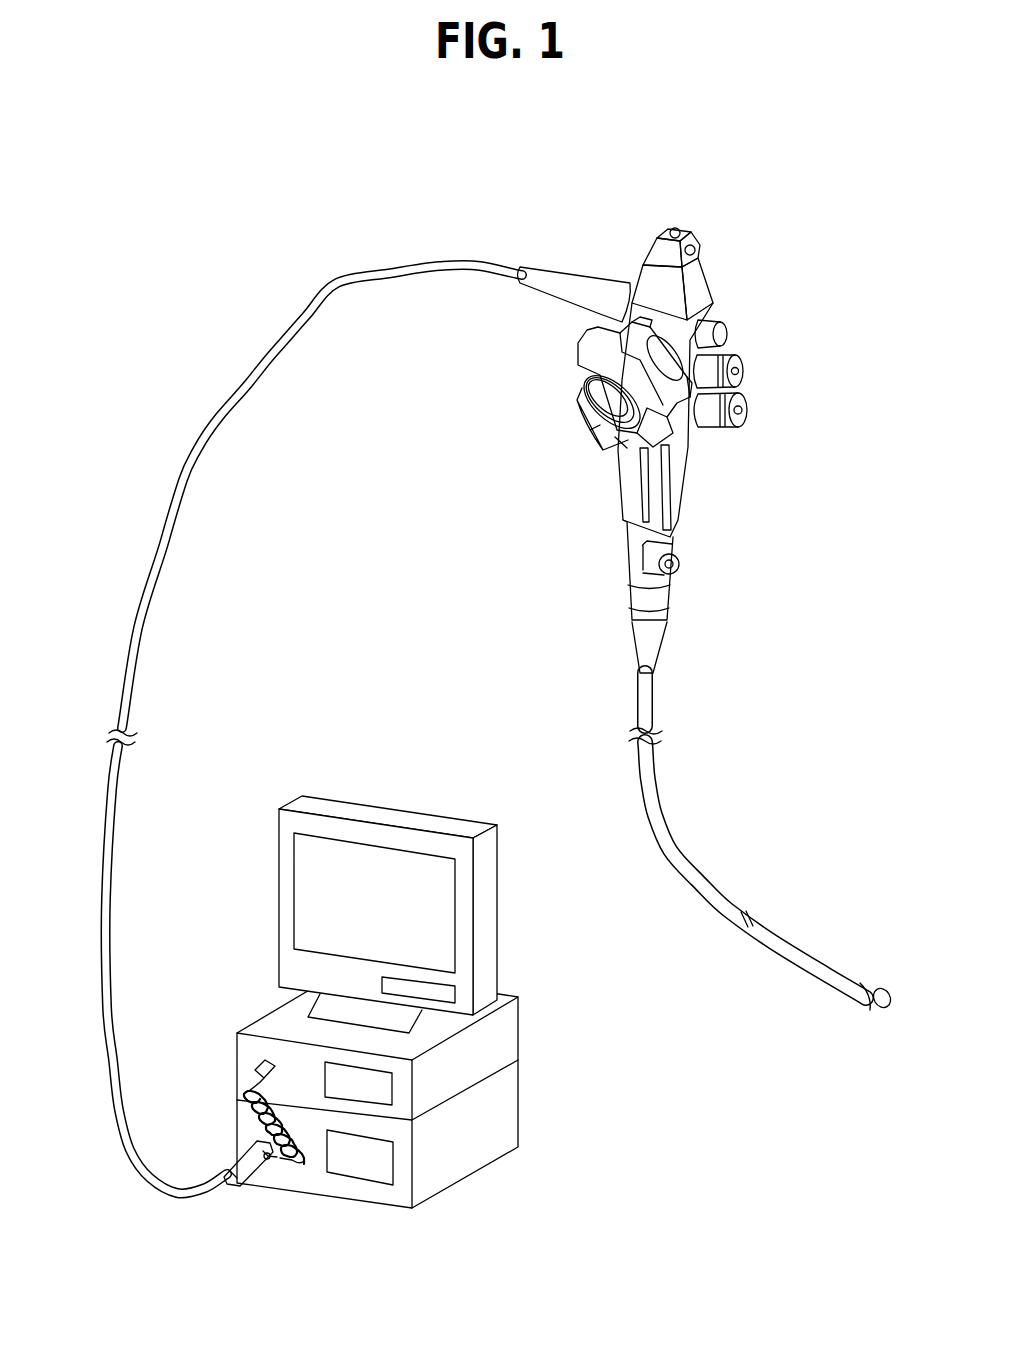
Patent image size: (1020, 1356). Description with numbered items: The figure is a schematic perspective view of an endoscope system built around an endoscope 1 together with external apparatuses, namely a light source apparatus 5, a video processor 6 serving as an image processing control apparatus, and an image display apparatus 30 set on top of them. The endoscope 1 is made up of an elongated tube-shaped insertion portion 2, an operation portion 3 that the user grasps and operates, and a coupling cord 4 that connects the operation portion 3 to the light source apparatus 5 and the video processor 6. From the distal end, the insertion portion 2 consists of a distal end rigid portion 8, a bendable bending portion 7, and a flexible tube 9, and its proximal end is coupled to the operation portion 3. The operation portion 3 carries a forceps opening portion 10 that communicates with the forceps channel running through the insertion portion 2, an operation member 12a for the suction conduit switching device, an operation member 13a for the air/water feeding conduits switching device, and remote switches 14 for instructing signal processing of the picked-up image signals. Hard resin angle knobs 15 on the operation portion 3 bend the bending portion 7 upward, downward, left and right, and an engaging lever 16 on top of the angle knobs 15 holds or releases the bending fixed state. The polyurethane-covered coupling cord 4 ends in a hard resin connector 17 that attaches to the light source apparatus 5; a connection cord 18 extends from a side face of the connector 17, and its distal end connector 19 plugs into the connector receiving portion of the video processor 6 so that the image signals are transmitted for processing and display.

The endoscope 1 is at (332, 204).
The insertion portion 2 is at (761, 842).
The operation portion 3 is at (674, 397).
The coupling cord 4 is at (228, 392).
The light source apparatus 5 is at (513, 1110).
The video processor 6 is at (513, 1030).
The bending portion 7 is at (792, 950).
The distal end rigid portion 8 is at (867, 983).
The flexible tube 9 is at (748, 876).
The forceps opening portion 10 is at (680, 562).
The operation member for suction conduit switching device 12a is at (745, 370).
The operation member for air/water feeding conduits switching device 13a is at (764, 412).
The remote switches 14 is at (720, 317).
The angle knobs 15 is at (578, 384).
The engaging lever 16 is at (610, 420).
The connector 17 is at (235, 1180).
The connection cord 18 is at (258, 1118).
The distal end connector 19 is at (243, 1075).
The image display apparatus 30 is at (485, 928).